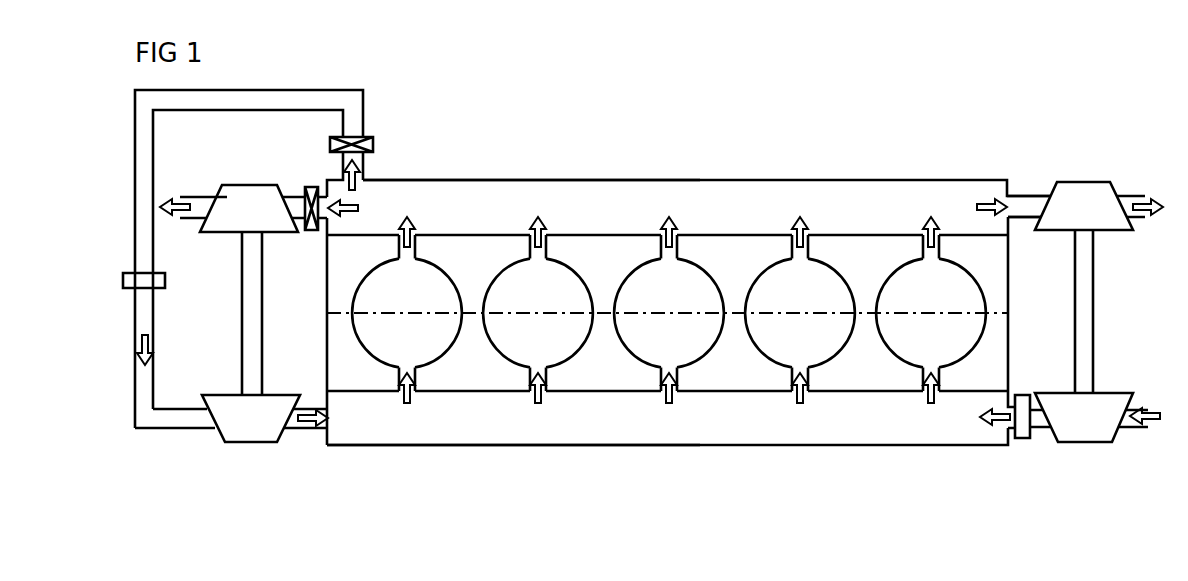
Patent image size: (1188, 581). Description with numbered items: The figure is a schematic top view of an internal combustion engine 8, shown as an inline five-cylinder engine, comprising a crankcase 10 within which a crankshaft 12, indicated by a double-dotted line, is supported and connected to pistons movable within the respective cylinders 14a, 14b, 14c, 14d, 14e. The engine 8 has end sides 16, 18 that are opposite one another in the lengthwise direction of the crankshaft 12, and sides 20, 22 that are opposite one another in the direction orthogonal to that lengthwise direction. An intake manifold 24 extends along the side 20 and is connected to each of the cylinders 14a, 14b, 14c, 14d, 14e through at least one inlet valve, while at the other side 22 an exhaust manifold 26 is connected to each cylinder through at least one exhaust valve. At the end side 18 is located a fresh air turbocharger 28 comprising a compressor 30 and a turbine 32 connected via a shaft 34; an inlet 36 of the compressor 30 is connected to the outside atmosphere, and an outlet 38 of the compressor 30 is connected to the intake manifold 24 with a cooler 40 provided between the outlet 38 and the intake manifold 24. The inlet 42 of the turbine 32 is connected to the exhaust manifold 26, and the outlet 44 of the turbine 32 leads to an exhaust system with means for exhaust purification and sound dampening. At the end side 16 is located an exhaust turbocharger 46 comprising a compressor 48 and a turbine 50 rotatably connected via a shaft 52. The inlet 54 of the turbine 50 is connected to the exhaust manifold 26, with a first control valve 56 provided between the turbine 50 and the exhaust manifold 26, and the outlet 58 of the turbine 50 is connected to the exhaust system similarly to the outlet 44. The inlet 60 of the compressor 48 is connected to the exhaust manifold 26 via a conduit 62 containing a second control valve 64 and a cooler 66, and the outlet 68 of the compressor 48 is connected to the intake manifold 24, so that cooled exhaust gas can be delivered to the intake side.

The internal combustion engine 8 is at (858, 124).
The crankcase 10 is at (1010, 295).
The crankshaft 12 is at (336, 316).
The cylinder 14a is at (423, 350).
The cylinder 14b is at (554, 350).
The cylinder 14c is at (685, 350).
The cylinder 14d is at (816, 350).
The cylinder 14e is at (947, 350).
The end side 16 is at (325, 337).
The end side 18 is at (1010, 327).
The side 20 is at (505, 447).
The side 22 is at (638, 179).
The intake manifold 24 is at (707, 447).
The exhaust manifold 26 is at (768, 180).
The fresh air turbocharger 28 is at (1095, 345).
The compressor 30 is at (1082, 437).
The turbine 32 is at (1082, 185).
The shaft 34 is at (1088, 258).
The inlet 36 is at (1123, 427).
The outlet 38 is at (1043, 417).
The cooler 40 is at (1023, 395).
The inlet 42 is at (1044, 195).
The outlet 44 is at (1117, 200).
The exhaust turbocharger 46 is at (241, 331).
The compressor 48 is at (248, 437).
The turbine 50 is at (245, 192).
The shaft 52 is at (243, 310).
The inlet 54 is at (298, 194).
The first control valve 56 is at (310, 232).
The outlet 58 is at (213, 197).
The inlet 60 is at (207, 423).
The conduit 62 is at (317, 91).
The second control valve 64 is at (378, 146).
The cooler 66 is at (166, 283).
The outlet 68 is at (293, 425).